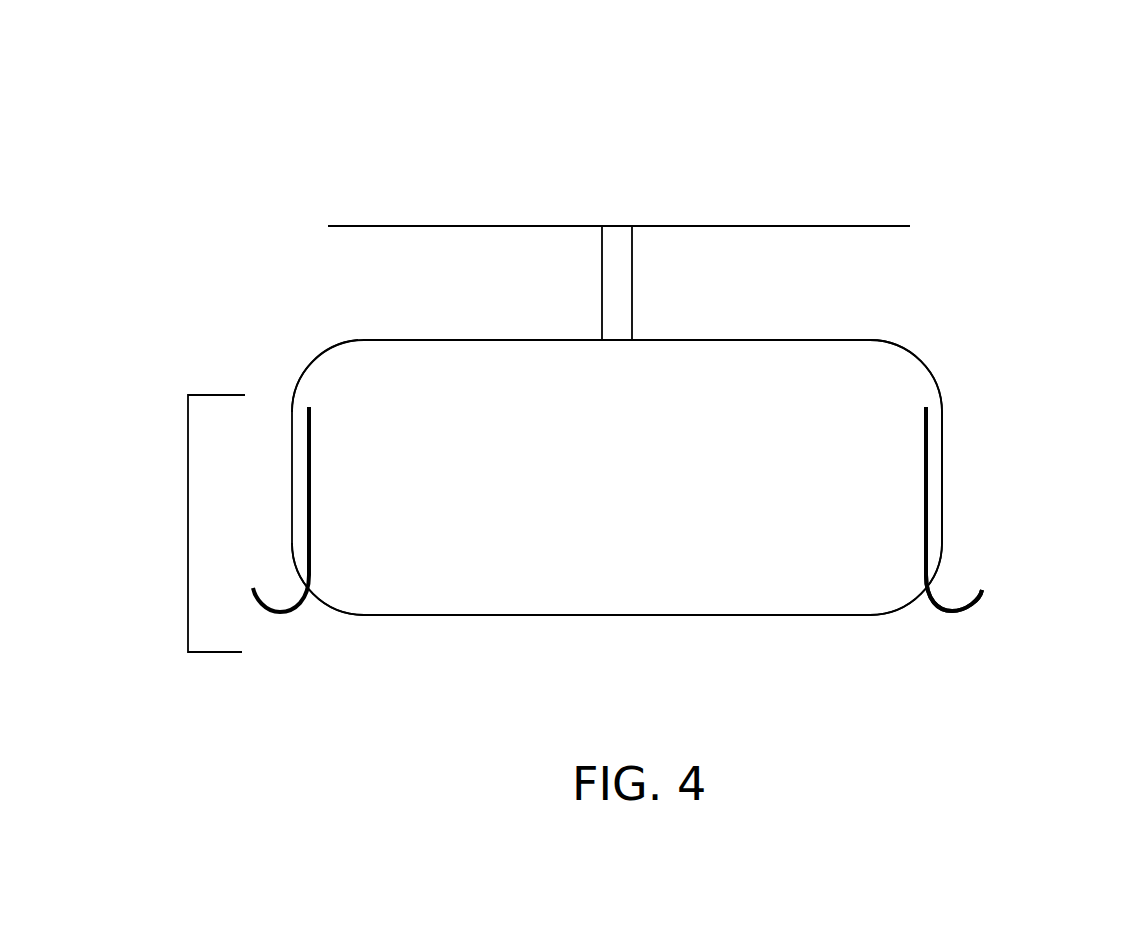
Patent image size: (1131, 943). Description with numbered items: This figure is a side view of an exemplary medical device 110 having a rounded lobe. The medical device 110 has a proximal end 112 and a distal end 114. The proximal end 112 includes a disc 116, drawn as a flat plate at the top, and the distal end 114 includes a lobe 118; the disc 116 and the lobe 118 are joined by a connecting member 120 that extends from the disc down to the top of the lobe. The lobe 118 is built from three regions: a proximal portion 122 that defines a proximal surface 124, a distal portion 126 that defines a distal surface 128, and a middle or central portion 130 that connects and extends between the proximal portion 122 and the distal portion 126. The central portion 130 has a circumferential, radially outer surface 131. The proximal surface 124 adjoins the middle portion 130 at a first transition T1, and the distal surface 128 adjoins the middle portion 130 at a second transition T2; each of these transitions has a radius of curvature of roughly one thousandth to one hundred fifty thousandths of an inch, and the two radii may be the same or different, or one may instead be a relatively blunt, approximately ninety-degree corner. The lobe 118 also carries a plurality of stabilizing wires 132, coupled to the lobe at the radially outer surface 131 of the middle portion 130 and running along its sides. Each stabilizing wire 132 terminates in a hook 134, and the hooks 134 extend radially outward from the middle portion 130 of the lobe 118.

The medical device 110 is at (688, 175).
The proximal end 112 is at (338, 195).
The distal end 114 is at (384, 678).
The disc 116 is at (727, 226).
The lobe 118 is at (648, 638).
The connecting member 120 is at (632, 283).
The proximal portion 122 is at (372, 322).
The proximal surface 124 is at (358, 340).
The distal portion 126 is at (715, 635).
The distal surface 128 is at (838, 615).
The middle portion 130 is at (188, 537).
The radially outer surface 131 is at (942, 510).
The stabilizing wires 132 is at (926, 452).
The hook 134 is at (982, 590).
The first transition T1 is at (925, 367).
The second transition T2 is at (337, 608).